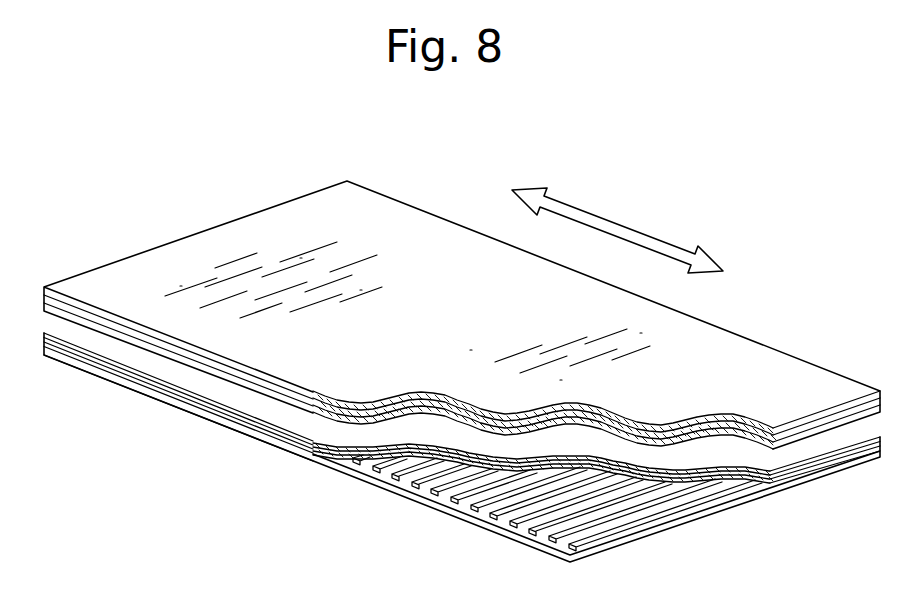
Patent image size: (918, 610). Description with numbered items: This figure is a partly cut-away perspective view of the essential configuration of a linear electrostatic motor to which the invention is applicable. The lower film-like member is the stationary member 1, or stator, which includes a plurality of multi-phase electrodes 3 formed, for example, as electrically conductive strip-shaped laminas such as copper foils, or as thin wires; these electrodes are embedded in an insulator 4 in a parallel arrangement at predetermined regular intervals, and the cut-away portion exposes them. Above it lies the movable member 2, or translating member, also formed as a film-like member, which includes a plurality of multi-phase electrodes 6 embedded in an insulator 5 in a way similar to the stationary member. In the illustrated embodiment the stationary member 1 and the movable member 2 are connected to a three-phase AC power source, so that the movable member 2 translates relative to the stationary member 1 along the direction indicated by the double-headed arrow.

The stationary member 1 is at (162, 403).
The movable member 2 is at (219, 226).
The multi-phase electrodes 3 is at (475, 518).
The insulator 4 is at (46, 346).
The insulator 5 is at (44, 297).
The multi-phase electrodes 6 is at (718, 422).